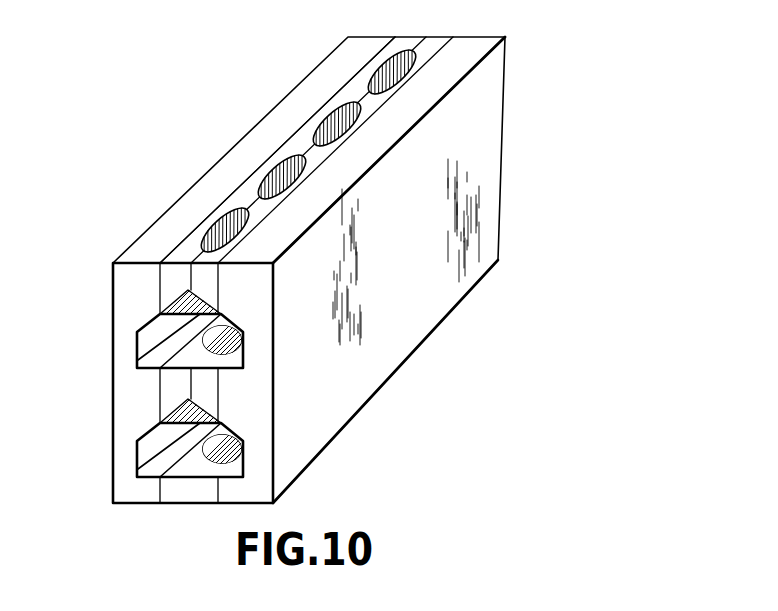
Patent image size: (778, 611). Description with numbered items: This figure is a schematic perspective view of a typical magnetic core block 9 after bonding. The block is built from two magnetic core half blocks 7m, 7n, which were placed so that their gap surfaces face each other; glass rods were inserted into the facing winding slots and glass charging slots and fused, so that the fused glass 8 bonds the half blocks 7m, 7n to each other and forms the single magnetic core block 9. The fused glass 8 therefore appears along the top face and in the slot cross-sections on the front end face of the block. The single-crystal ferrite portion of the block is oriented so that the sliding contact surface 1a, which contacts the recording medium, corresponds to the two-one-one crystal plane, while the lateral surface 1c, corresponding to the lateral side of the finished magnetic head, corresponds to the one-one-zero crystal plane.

The magnetic core block 9 is at (180, 161).
The magnetic core half block 7m is at (340, 67).
The magnetic core half block 7n is at (453, 62).
The sliding contact surface 1a is at (182, 250).
The lateral surface 1c is at (167, 282).
The fused glass 8 is at (368, 85).